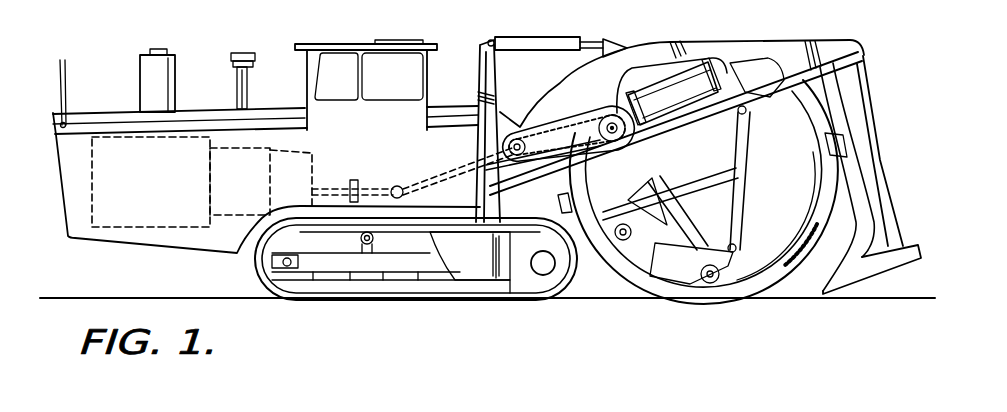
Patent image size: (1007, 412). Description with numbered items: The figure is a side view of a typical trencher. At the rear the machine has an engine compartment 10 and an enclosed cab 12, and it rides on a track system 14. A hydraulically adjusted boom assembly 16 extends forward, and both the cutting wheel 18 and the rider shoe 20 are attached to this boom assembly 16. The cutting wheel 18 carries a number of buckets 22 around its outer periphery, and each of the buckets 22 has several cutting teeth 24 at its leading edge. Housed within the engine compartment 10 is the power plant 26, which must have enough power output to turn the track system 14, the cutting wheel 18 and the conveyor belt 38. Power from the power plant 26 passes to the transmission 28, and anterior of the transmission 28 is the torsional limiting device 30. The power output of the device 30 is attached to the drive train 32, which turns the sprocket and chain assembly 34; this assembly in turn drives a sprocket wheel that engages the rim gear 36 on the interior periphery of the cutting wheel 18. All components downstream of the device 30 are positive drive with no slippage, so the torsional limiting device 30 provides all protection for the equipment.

The engine compartment 10 is at (93, 110).
The enclosed cab 12 is at (330, 50).
The track system 14 is at (353, 300).
The hydraulically adjusted boom assembly 16 is at (650, 50).
The cutting wheel 18 is at (670, 290).
The rider shoe 20 is at (872, 100).
The buckets 22 is at (850, 150).
The cutting teeth 24 is at (557, 197).
The power plant 26 is at (152, 228).
The transmission 28 is at (228, 215).
The torsional limiting device 30 is at (312, 153).
The drive train 32 is at (368, 185).
The sprocket and chain assembly 34 is at (558, 125).
The rim gear 36 is at (797, 224).
The conveyor belt 38 is at (680, 78).